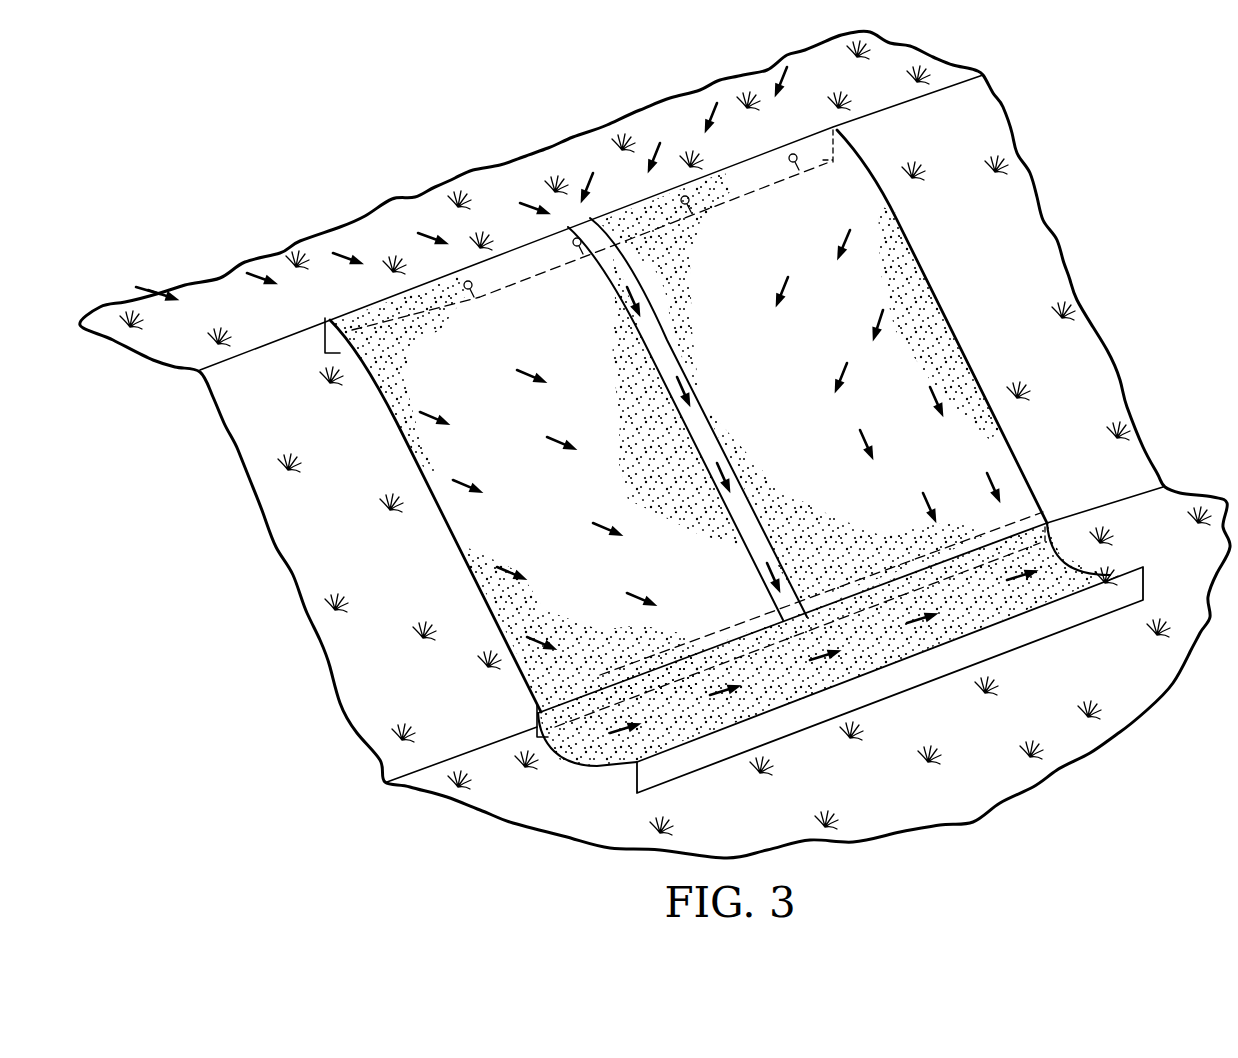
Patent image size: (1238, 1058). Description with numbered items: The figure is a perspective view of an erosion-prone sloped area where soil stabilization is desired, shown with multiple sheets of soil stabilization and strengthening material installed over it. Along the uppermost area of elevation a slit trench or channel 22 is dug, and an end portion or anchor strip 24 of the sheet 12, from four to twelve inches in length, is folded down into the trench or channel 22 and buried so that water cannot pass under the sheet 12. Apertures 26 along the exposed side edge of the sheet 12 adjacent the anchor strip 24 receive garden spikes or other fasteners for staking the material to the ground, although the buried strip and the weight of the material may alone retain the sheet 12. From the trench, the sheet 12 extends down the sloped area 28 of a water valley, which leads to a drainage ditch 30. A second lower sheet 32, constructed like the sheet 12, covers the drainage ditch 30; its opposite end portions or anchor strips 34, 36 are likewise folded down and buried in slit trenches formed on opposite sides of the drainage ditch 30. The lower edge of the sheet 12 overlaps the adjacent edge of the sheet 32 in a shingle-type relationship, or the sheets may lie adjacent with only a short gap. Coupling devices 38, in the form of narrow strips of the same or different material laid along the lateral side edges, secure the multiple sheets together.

The sheet 12 is at (911, 295).
The slit trench or channel 22 is at (325, 340).
The anchor strip 24 is at (845, 146).
The apertures 26 is at (476, 298).
The sloped area 28 is at (428, 547).
The drainage ditch 30 is at (573, 763).
The second lower sheet 32 is at (1018, 595).
The anchor strip 34 is at (535, 727).
The anchor strip 36 is at (693, 773).
The coupling devices 38 is at (713, 427).